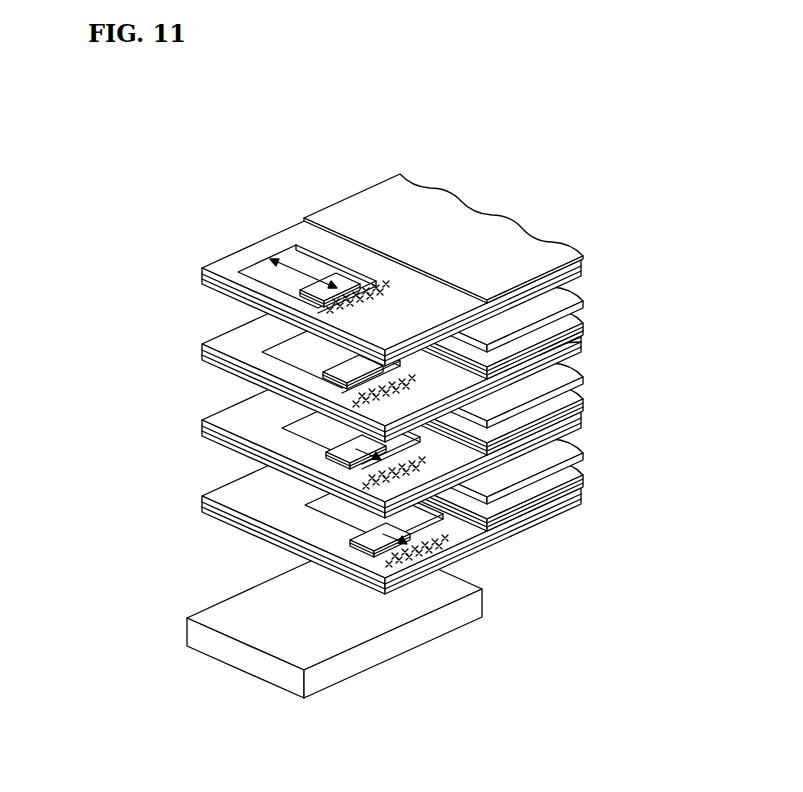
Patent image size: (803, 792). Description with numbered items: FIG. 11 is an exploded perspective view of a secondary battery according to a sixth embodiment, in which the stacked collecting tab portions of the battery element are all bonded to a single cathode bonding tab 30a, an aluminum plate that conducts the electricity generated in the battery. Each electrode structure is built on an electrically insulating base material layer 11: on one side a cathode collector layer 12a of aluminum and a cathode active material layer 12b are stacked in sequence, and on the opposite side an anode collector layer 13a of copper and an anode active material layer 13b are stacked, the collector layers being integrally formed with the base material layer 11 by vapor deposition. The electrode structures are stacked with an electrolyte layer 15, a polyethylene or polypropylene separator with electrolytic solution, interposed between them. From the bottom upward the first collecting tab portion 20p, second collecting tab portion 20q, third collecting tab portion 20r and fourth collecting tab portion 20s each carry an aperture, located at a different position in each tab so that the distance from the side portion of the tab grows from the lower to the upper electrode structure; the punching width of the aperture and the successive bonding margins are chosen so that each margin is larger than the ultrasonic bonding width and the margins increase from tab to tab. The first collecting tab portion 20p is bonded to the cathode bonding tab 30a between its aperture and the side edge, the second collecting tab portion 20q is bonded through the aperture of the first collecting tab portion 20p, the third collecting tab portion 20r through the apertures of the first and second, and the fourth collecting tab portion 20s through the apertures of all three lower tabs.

The fourth collecting tab portion 20s is at (212, 256).
The third collecting tab portion 20r is at (212, 334).
The second collecting tab portion 20q is at (212, 410).
The first collecting tab portion 20p is at (212, 486).
The anode active material layer 13b is at (591, 298).
The anode collector layer 13a is at (588, 330).
The base material layer 11 is at (587, 340).
The cathode collector layer 12a is at (587, 357).
The cathode active material layer 12b is at (580, 368).
The electrolyte layer 15 is at (590, 458).
The cathode bonding tab 30a is at (222, 612).